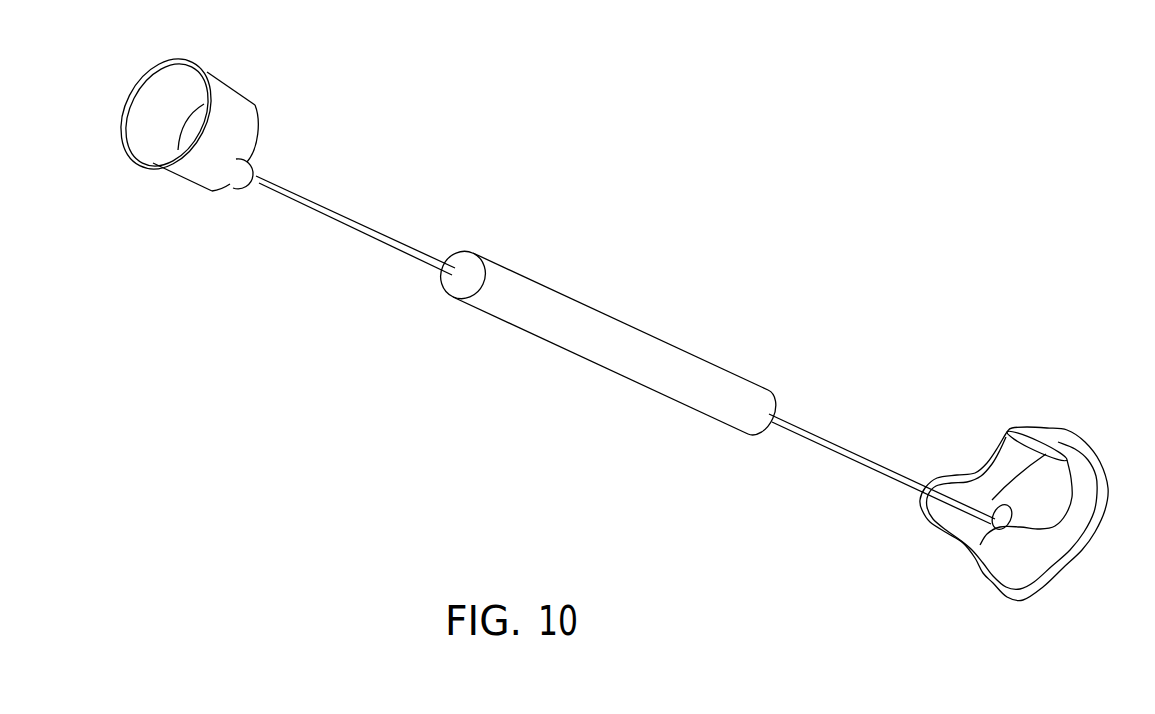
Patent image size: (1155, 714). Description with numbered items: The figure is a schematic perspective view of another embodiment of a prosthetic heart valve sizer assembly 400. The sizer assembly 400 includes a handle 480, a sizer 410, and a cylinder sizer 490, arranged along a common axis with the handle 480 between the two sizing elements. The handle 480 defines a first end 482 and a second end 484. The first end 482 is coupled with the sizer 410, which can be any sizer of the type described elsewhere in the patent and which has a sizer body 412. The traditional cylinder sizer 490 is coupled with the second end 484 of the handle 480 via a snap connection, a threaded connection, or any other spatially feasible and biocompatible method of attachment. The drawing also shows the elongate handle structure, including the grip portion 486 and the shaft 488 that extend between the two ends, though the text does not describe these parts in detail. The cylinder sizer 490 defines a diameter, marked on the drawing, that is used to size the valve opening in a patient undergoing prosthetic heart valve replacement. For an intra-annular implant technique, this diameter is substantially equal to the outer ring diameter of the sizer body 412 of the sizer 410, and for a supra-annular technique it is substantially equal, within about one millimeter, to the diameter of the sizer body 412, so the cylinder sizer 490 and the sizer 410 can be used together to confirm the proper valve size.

The prosthetic heart valve sizer assembly 400 is at (438, 125).
The sizer 410 is at (1022, 412).
The sizer body 412 is at (1067, 567).
The handle 480 is at (432, 312).
The first end 482 is at (988, 497).
The second end 484 is at (236, 191).
The grip / handle body 486 is at (617, 377).
The shaft 488 is at (402, 240).
The cylinder sizer 490 is at (162, 192).